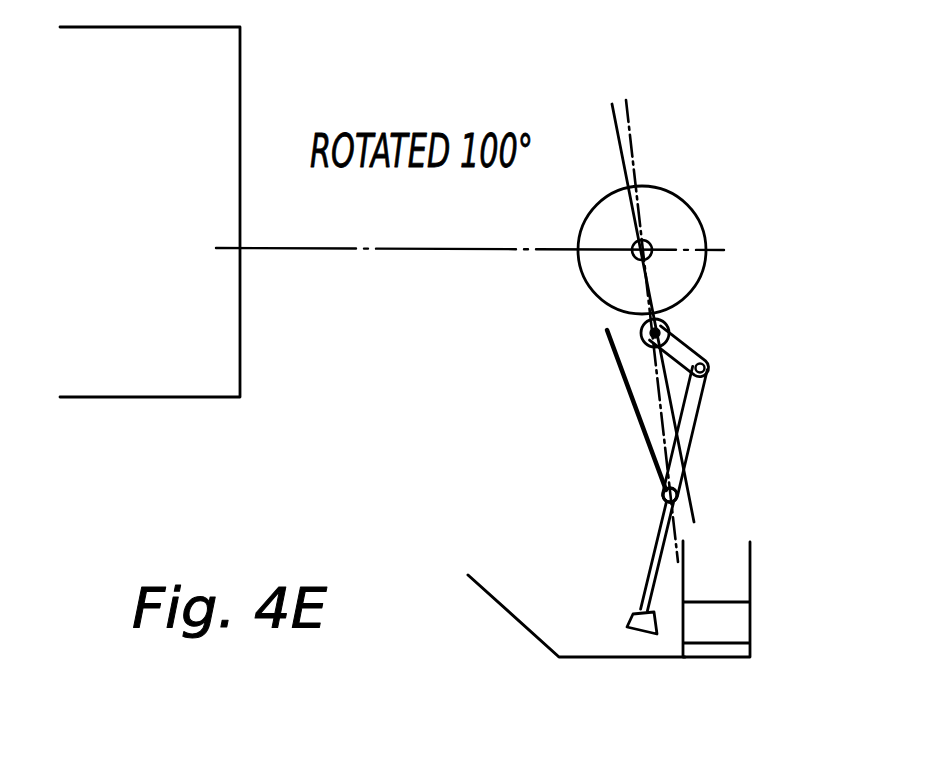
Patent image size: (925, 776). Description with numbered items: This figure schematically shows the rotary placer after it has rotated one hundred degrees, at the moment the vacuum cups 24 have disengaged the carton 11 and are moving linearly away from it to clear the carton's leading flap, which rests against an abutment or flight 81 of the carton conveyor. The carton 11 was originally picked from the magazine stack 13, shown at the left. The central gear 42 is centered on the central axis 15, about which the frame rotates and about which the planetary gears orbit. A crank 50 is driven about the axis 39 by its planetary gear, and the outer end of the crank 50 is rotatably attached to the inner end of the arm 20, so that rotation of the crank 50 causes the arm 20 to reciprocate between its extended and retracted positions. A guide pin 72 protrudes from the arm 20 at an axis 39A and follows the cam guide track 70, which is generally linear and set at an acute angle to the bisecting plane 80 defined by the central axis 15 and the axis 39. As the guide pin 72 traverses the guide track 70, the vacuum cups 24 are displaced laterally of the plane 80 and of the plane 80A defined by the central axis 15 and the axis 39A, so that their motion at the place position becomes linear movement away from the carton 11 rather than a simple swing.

The magazine stack 13 is at (148, 372).
The central gear 42 is at (698, 266).
The central axis 15 is at (633, 258).
The bisecting plane 80 is at (616, 127).
The plane 80A is at (633, 148).
The axis 39 is at (643, 333).
The crank 50 is at (681, 344).
The arm 20 is at (687, 430).
The cam guide track 70 is at (632, 400).
The guide pin 72 is at (663, 494).
The axis 39A is at (660, 490).
The vacuum cups 24 is at (628, 627).
The carton 11 is at (493, 592).
The flight 81 is at (713, 610).